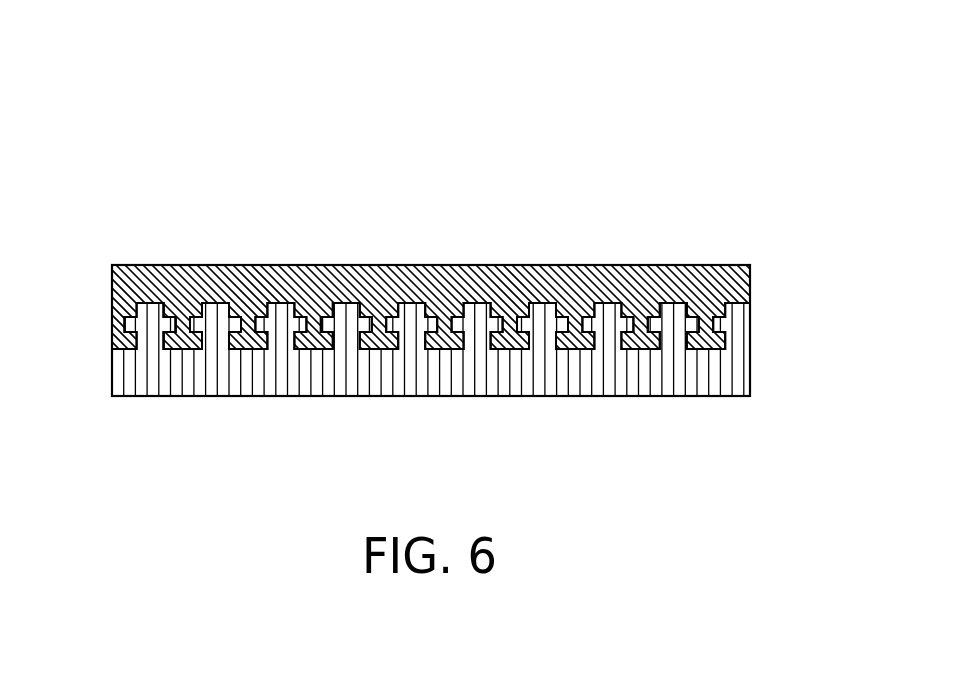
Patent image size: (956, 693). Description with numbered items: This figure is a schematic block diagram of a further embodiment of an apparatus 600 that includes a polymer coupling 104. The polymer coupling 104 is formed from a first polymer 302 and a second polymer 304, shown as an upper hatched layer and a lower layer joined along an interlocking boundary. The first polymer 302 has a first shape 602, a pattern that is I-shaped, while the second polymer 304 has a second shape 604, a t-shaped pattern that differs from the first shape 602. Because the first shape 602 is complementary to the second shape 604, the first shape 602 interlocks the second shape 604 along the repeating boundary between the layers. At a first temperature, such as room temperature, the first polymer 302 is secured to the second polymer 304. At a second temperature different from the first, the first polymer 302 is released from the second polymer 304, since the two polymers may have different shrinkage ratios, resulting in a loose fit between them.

The polymer coupling 104 is at (712, 58).
The apparatus 600 is at (121, 152).
The first polymer 302 is at (746, 286).
The second polymer 304 is at (122, 380).
The first shape 602 is at (183, 342).
The second shape 604 is at (129, 334).